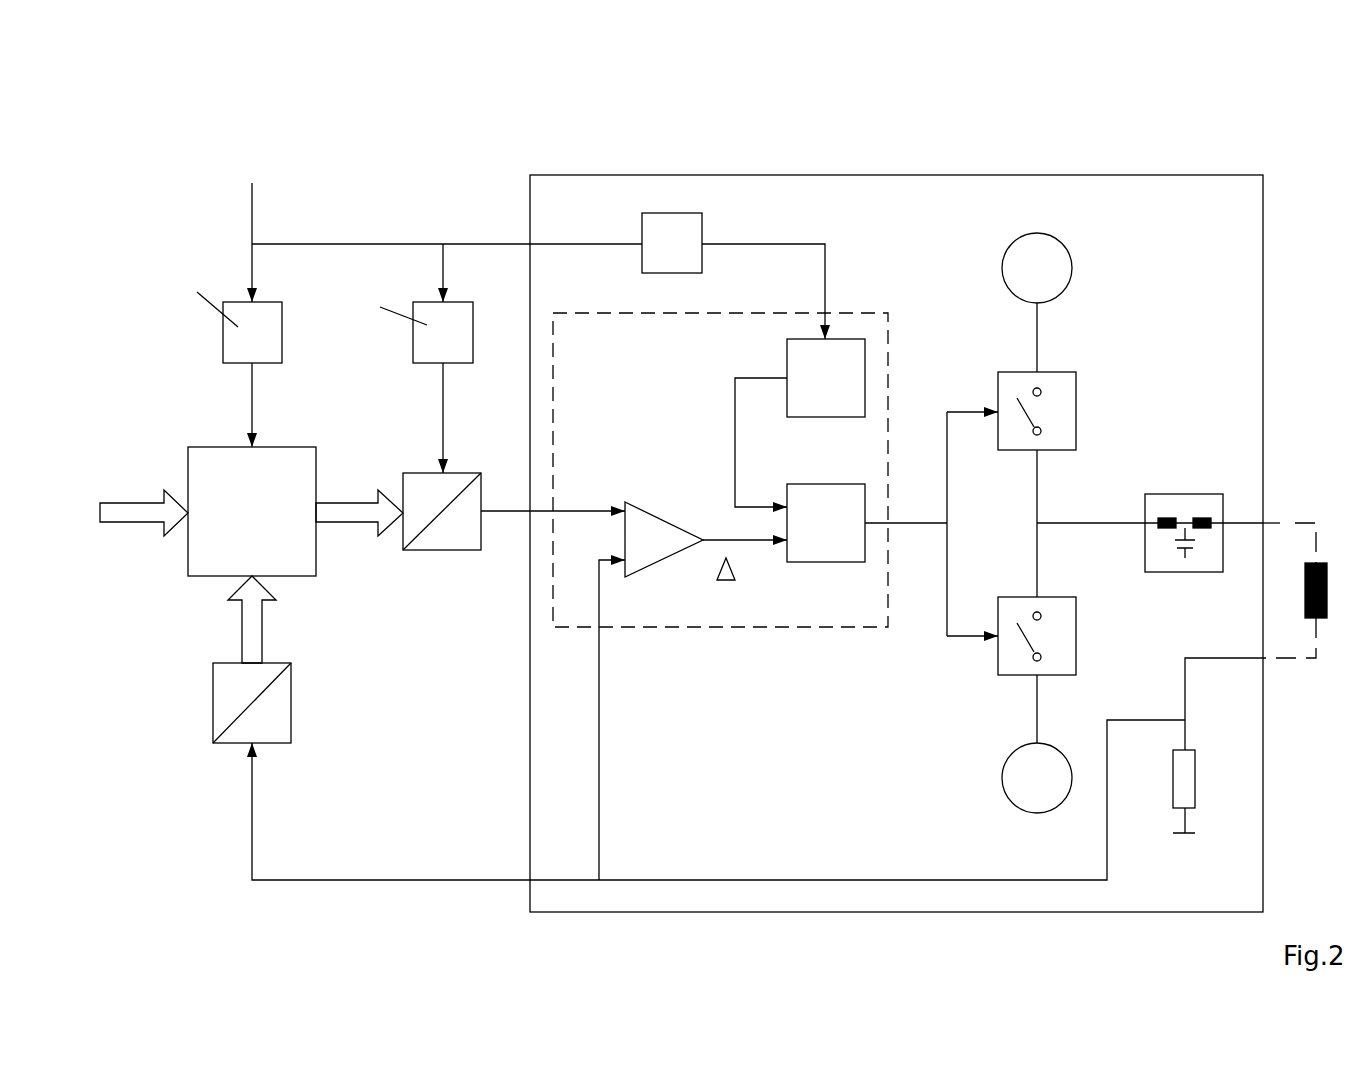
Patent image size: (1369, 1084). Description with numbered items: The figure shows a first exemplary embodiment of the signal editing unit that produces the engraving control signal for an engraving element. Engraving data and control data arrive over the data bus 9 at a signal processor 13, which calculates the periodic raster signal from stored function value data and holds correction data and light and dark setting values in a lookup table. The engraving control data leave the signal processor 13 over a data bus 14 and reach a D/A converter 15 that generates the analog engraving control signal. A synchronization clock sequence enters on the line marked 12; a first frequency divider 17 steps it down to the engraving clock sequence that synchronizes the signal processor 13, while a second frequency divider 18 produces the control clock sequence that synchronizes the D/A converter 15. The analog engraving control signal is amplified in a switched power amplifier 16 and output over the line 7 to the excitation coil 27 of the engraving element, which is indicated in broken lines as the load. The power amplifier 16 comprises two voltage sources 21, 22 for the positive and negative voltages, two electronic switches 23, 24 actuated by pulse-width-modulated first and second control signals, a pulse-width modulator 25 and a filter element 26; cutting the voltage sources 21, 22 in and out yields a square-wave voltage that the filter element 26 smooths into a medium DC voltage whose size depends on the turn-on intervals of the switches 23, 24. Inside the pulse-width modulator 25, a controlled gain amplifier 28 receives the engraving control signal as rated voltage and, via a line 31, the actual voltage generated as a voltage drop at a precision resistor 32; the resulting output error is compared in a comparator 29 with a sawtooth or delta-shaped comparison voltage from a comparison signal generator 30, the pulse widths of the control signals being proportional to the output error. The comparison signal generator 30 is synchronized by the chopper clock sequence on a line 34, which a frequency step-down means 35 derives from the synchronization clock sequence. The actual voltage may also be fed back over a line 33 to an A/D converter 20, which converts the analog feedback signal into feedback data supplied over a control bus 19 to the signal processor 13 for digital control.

The line 7 is at (1277, 522).
The data bus 9 is at (138, 513).
The synchronization signal input 12 is at (252, 218).
The signal processor 13 is at (298, 555).
The data bus 14 is at (347, 512).
The D/A converter 15 is at (472, 540).
The power amplifier 16 is at (580, 897).
The first frequency divider 17 is at (242, 340).
The second frequency divider 18 is at (448, 332).
The control bus 19 is at (253, 622).
The A/D converter 20 is at (275, 732).
The voltage source 21 is at (1060, 254).
The voltage source 22 is at (1008, 786).
The electronic switch 23 is at (1062, 388).
The electronic switch 24 is at (1062, 643).
The pulse-width modulator 25 is at (720, 607).
The filter element 26 is at (1165, 505).
The excitation coil 27 is at (1325, 622).
The controlled gain amplifier 28 is at (673, 545).
The comparator 29 is at (833, 547).
The comparison signal generator 30 is at (803, 357).
The line 31 is at (599, 722).
The precision resistor 32 is at (1182, 786).
The line 33 is at (355, 880).
The line 34 is at (827, 267).
The frequency step-down means 35 is at (690, 220).